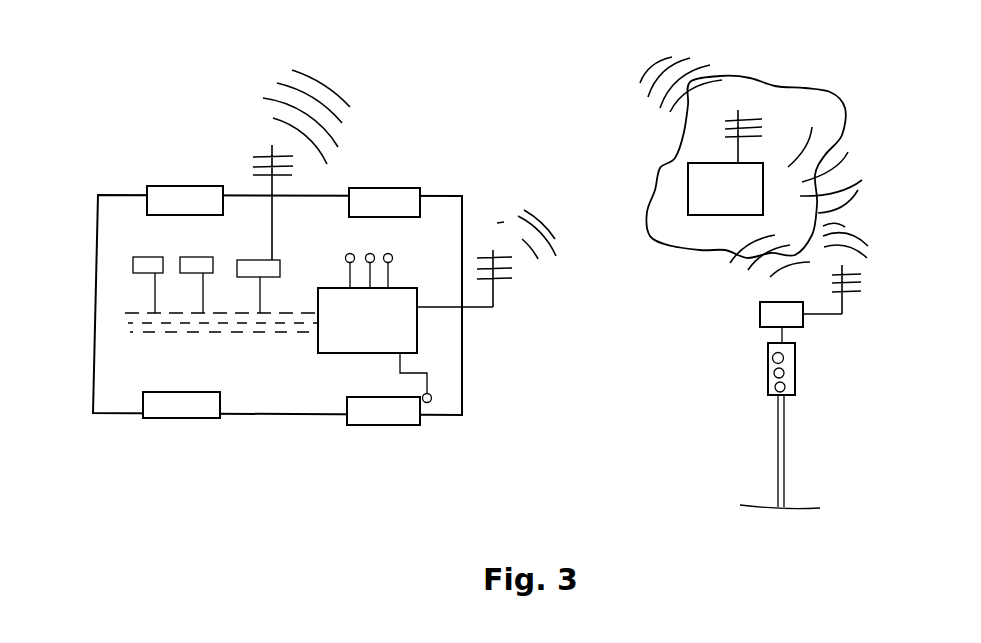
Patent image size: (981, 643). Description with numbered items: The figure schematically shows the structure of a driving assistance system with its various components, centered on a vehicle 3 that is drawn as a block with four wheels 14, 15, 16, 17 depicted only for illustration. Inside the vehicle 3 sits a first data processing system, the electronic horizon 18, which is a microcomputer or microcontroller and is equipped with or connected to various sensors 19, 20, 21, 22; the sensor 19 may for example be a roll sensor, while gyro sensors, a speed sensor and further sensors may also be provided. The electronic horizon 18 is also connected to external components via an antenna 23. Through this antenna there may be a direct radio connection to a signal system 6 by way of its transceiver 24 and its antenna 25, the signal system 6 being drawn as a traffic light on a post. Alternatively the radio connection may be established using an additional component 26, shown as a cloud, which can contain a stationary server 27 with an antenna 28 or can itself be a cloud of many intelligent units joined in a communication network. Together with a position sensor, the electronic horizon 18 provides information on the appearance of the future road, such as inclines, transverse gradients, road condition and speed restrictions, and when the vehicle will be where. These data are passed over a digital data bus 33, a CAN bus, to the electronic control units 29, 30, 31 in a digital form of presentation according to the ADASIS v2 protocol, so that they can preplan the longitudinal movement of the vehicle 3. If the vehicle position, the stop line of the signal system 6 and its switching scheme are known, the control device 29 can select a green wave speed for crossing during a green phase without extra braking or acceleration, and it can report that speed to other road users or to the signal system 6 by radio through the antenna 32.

The vehicle 3 is at (74, 323).
The signal system 6 is at (800, 395).
The wheel 14 is at (168, 186).
The wheel 15 is at (400, 187).
The wheel 16 is at (392, 425).
The wheel 17 is at (198, 418).
The first data processing system (electronic horizon) 18 is at (417, 327).
The sensor 19 is at (432, 400).
The sensor 20 is at (396, 252).
The sensor 21 is at (368, 250).
The sensor 22 is at (345, 256).
The antenna 23 is at (507, 285).
The transceiver 24 is at (752, 317).
The antenna 25 is at (867, 283).
The additional component 26 is at (833, 86).
The stationary server 27 is at (693, 192).
The antenna 28 is at (732, 108).
The electronic control unit 29 is at (247, 259).
The electronic control unit 30 is at (198, 258).
The electronic control unit 31 is at (150, 256).
The antenna 32 is at (254, 157).
The digital data bus 33 is at (220, 333).